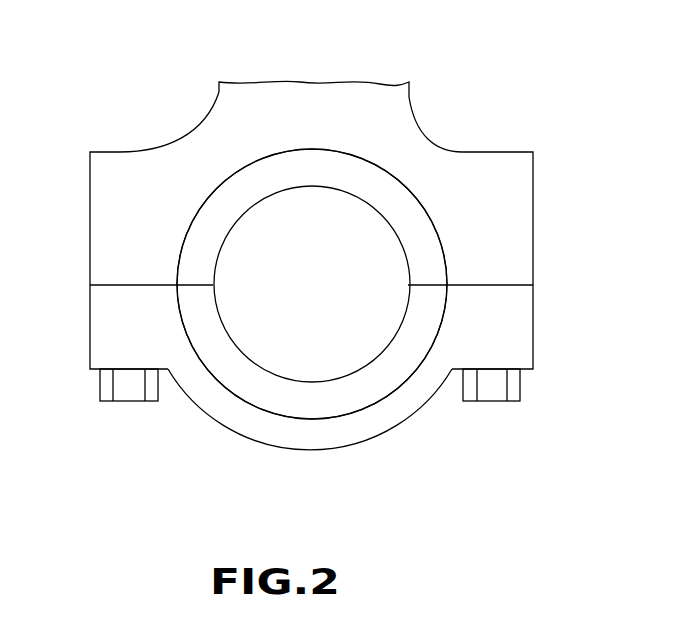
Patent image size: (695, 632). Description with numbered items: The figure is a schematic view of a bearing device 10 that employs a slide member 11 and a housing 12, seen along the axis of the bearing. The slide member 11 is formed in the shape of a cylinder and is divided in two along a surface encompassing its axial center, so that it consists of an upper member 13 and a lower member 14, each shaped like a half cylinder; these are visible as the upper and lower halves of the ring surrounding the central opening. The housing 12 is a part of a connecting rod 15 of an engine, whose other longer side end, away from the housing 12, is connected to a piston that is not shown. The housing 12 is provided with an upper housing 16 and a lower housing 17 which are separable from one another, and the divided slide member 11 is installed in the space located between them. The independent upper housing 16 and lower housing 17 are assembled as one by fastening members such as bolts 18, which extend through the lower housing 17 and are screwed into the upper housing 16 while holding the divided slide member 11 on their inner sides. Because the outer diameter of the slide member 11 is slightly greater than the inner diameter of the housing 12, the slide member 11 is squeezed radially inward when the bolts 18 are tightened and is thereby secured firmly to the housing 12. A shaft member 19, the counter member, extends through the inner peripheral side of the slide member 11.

The bearing device 10 is at (518, 72).
The slide member 11 is at (192, 218).
The housing 12 is at (541, 212).
The upper member 13 is at (238, 170).
The lower member 14 is at (218, 383).
The connecting rod 15 is at (413, 97).
The upper housing 16 is at (118, 150).
The lower housing 17 is at (87, 332).
The bolts 18 is at (128, 402).
The shaft member 19 is at (347, 353).